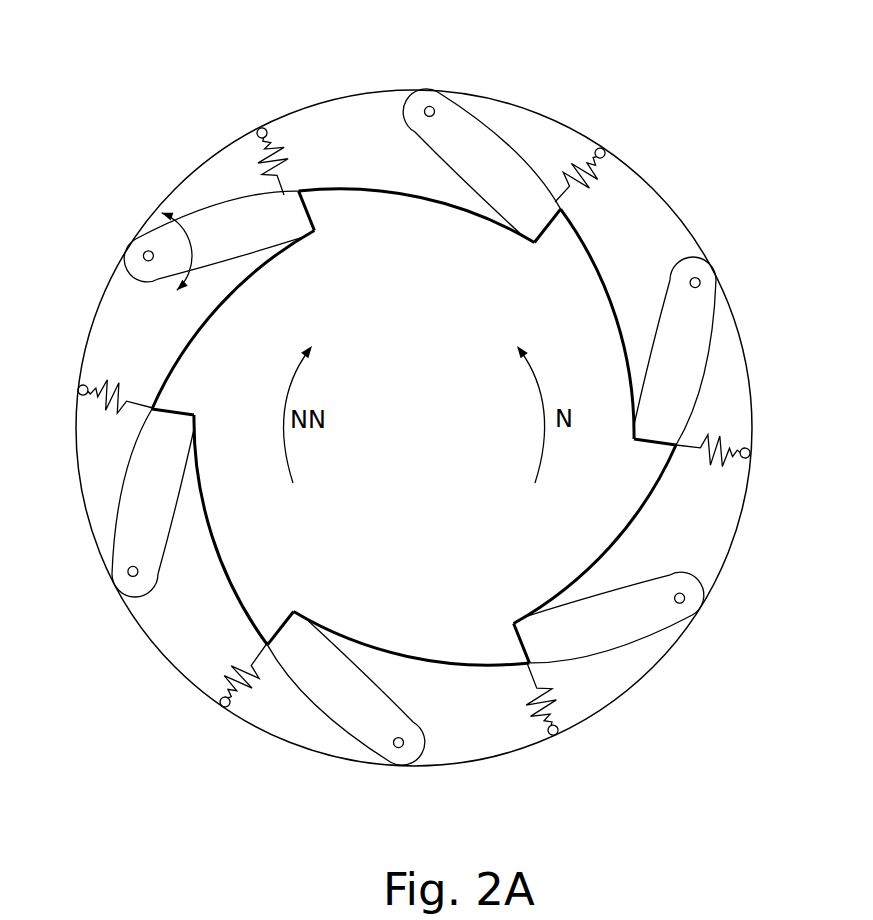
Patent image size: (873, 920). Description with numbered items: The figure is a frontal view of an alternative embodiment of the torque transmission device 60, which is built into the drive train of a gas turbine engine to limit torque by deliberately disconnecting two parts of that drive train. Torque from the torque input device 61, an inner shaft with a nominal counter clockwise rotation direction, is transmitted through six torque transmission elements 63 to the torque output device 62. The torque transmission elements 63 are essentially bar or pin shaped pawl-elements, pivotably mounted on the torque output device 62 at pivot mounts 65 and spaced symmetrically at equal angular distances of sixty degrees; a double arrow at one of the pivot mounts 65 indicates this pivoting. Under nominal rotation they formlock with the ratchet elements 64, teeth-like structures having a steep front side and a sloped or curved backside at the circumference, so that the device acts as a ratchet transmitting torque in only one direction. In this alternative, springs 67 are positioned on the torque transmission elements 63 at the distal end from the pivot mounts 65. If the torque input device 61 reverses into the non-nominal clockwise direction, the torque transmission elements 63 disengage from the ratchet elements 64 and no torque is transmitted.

The torque transmission device 60 is at (419, 427).
The torque input device 61 is at (638, 472).
The torque output device 62 is at (737, 537).
The torque transmission element 63 is at (475, 140).
The ratchet element 64 is at (313, 214).
The pivot mount 65 is at (426, 108).
The spring 67 is at (594, 178).